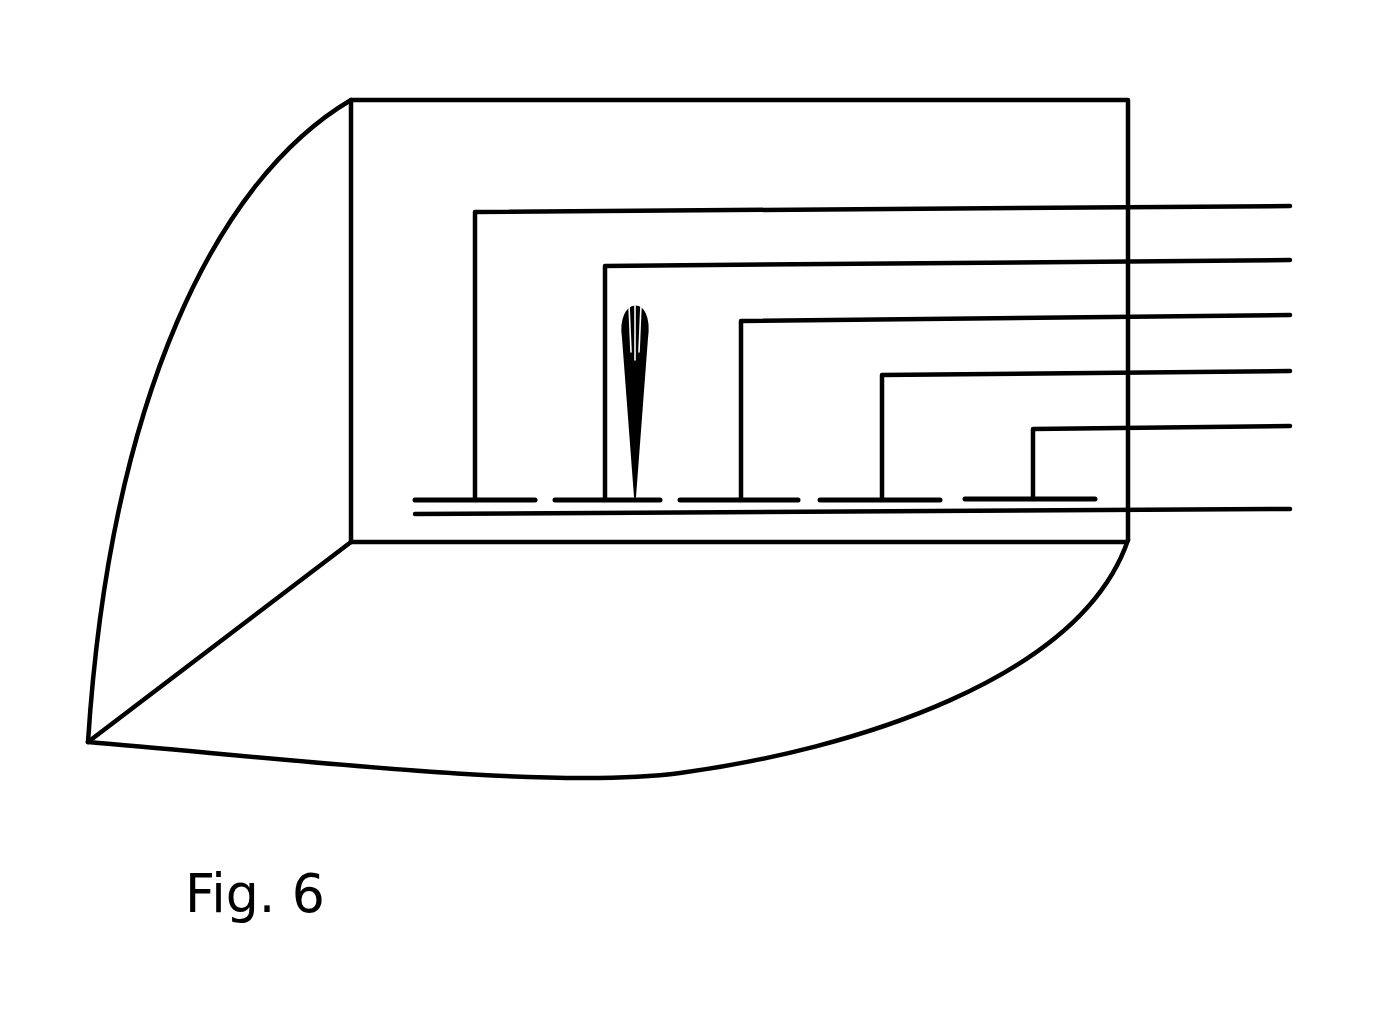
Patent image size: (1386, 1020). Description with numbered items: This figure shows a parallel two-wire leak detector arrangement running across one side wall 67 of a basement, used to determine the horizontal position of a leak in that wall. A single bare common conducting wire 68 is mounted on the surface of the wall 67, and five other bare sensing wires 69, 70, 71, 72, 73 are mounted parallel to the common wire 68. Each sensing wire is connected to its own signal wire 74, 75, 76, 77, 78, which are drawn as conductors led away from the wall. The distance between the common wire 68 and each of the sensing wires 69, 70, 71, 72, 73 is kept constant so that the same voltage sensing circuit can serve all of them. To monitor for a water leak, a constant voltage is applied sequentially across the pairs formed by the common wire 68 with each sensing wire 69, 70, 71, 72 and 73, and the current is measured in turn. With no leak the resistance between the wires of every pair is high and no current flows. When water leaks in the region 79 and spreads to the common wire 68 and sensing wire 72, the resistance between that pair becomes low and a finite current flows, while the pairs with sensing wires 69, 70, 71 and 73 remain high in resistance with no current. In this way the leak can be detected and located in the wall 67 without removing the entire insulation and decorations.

The wall 67 is at (1080, 146).
The common conducting wire 68 is at (897, 498).
The sensing wire 69 is at (982, 491).
The sensing wire 70 is at (833, 491).
The sensing wire 71 is at (708, 491).
The sensing wire 72 is at (572, 491).
The sensing wire 73 is at (437, 491).
The signal wire 74 is at (1206, 448).
The signal wire 75 is at (1130, 421).
The signal wire 76 is at (1060, 392).
The signal wire 77 is at (992, 363).
The signal wire 78 is at (927, 335).
The leak region 79 is at (658, 305).